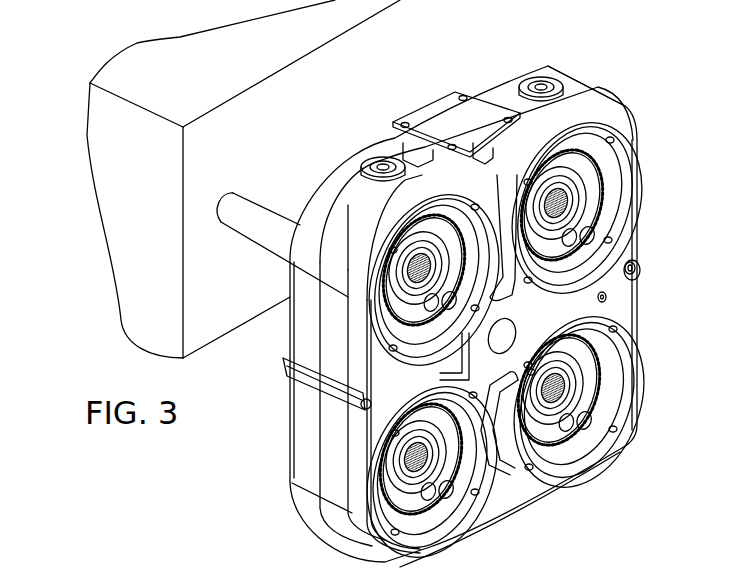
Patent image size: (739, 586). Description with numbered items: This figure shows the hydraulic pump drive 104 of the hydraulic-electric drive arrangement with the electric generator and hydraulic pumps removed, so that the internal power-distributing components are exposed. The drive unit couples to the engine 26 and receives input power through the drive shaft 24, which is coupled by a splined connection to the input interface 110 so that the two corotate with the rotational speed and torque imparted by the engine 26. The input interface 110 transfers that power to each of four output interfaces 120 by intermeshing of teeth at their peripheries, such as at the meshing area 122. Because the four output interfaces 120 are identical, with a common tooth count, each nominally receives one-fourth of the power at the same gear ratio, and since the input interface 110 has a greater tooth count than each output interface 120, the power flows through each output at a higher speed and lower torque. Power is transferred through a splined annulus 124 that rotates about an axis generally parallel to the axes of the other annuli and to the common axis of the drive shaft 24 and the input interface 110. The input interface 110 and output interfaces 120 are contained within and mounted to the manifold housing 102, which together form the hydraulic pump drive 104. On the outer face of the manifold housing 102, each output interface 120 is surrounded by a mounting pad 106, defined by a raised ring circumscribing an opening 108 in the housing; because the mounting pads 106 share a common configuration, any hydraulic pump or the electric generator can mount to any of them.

The drive shaft 24 is at (255, 212).
The engine 26 is at (105, 143).
The manifold housing 102 is at (300, 440).
The hydraulic pump drive 104 is at (610, 102).
The mounting pad 106 is at (380, 296).
The opening 108 is at (497, 175).
The input interface 110 is at (287, 382).
The output interface 120 is at (408, 254).
The meshing area 122 is at (453, 225).
The splined annulus 124 is at (400, 305).